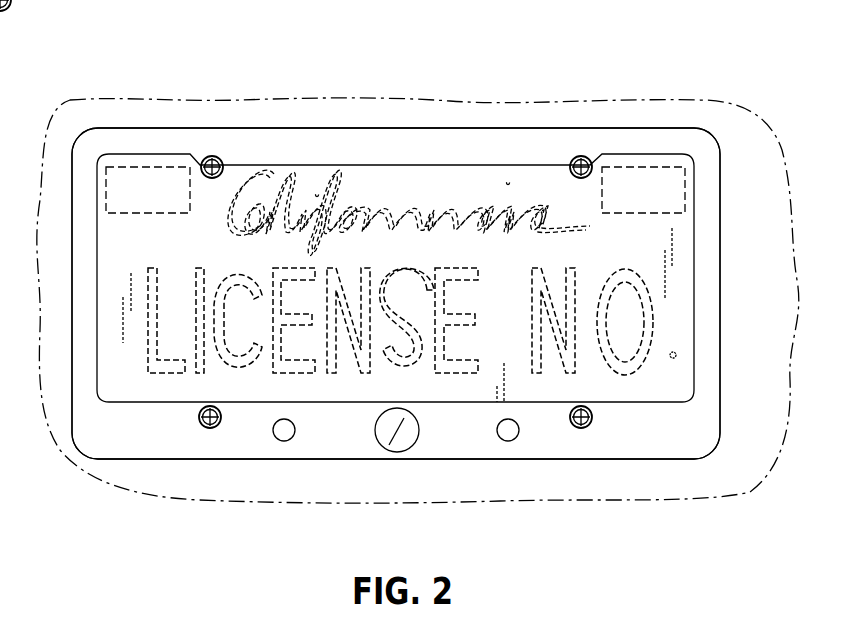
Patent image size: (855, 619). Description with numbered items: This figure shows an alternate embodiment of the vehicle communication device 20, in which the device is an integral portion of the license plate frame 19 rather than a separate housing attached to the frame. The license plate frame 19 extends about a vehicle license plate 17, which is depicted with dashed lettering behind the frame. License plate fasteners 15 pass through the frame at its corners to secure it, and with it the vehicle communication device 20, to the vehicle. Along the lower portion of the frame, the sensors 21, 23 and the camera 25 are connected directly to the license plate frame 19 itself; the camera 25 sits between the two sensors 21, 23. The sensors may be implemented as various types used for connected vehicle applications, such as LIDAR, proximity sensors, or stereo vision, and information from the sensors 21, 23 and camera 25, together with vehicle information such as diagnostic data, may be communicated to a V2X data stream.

The license plate fasteners 15 is at (203, 427).
The vehicle license plate 17 is at (420, 190).
The license plate frame 19 is at (664, 137).
The vehicle communication device 20 is at (572, 470).
The sensor 21 is at (281, 441).
The sensor 23 is at (510, 441).
The camera 25 is at (387, 452).